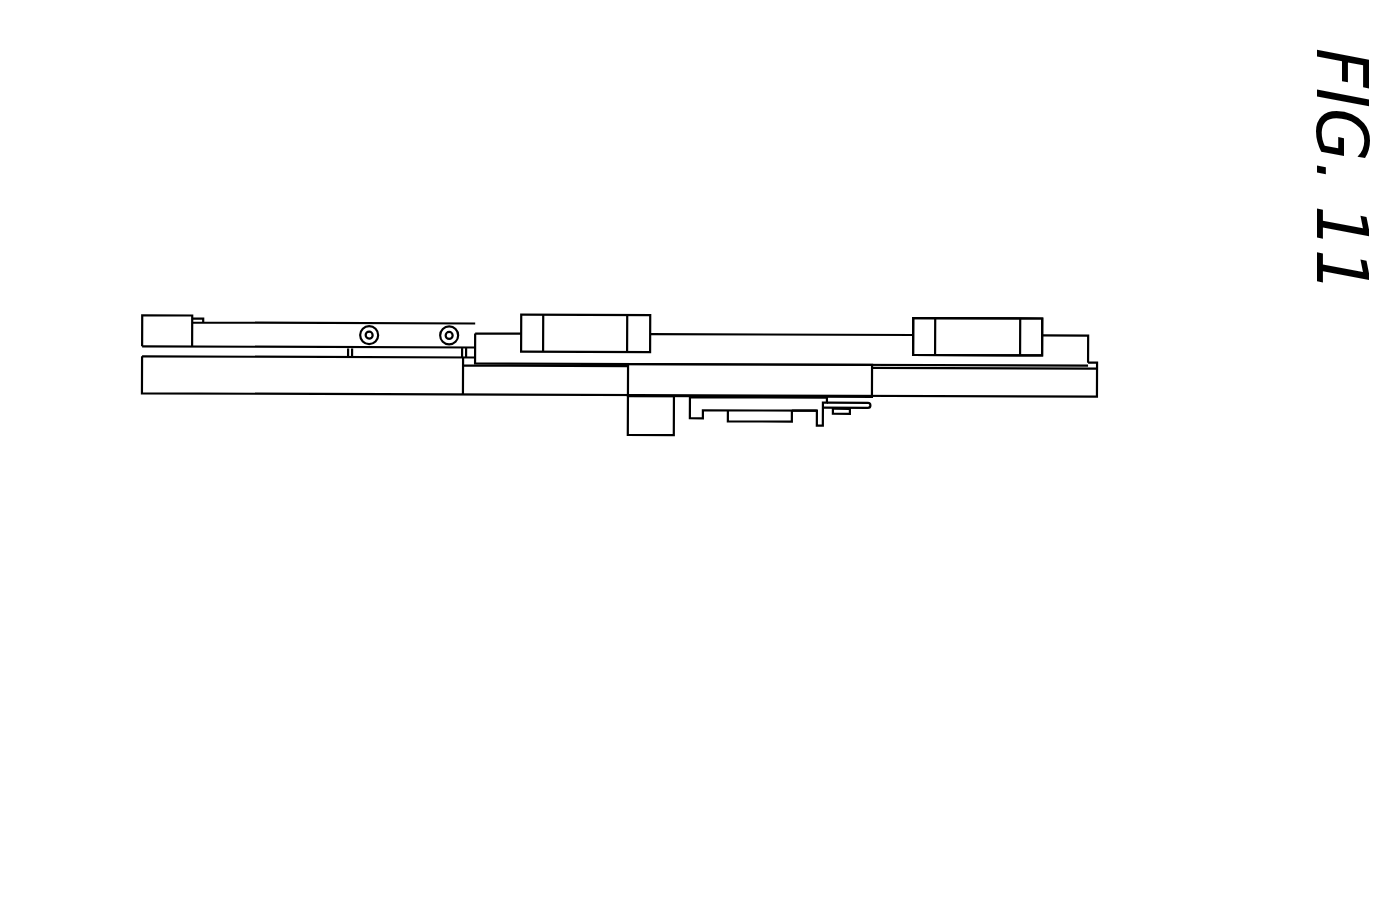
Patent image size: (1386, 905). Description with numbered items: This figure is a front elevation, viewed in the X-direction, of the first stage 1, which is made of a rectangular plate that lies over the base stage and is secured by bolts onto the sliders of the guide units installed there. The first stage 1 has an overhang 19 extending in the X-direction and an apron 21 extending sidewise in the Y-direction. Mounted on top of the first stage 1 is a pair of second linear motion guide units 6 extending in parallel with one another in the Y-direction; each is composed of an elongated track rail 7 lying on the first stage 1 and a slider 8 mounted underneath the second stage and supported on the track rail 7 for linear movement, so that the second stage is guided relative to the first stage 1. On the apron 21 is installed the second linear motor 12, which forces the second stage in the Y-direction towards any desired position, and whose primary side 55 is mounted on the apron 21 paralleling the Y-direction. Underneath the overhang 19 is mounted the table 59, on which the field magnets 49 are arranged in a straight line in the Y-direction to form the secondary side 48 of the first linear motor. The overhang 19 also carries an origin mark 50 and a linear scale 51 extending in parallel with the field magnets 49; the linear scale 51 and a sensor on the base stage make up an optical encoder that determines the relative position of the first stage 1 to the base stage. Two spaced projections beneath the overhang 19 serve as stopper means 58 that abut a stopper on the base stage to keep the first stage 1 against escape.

The first stage 1 is at (1029, 390).
The linear motion guide units 6 is at (923, 316).
The track rail 7 is at (781, 343).
The slider 8 is at (580, 335).
The second linear motor 12 is at (288, 335).
The overhang 19 is at (738, 378).
The apron 21 is at (302, 380).
The secondary side 48 is at (783, 430).
The field magnets 49 is at (753, 418).
The origin mark 50 is at (830, 415).
The linear scale 51 is at (845, 413).
The primary side 55 is at (321, 335).
The stopper means 58 is at (638, 413).
The table 59 is at (718, 405).